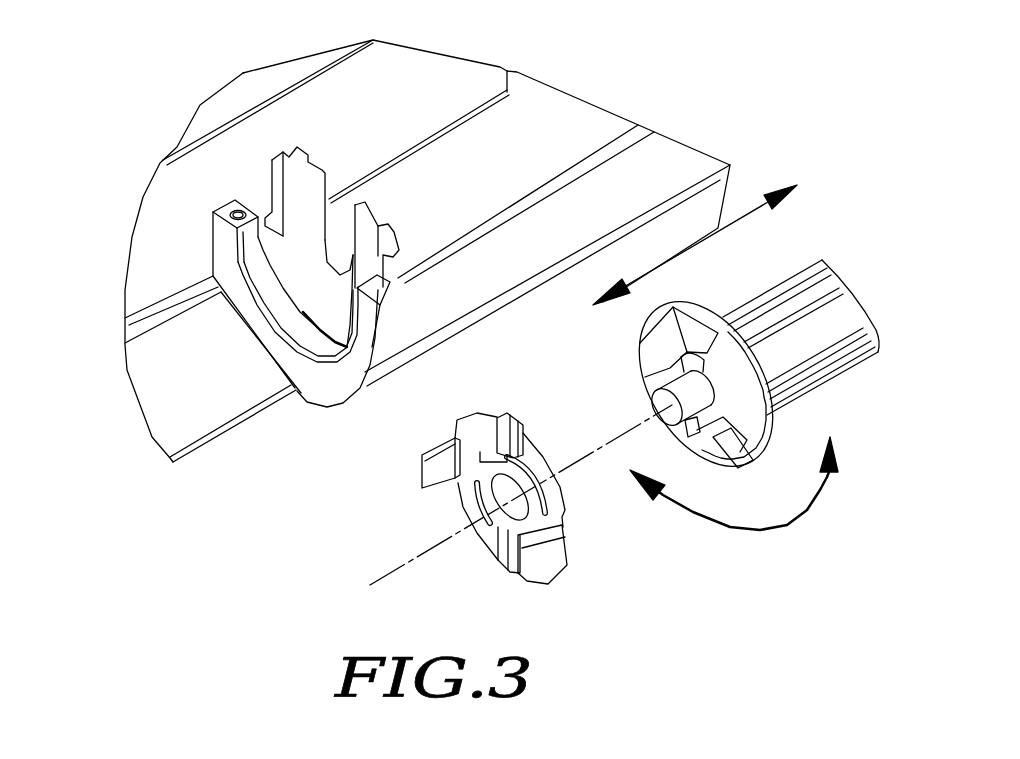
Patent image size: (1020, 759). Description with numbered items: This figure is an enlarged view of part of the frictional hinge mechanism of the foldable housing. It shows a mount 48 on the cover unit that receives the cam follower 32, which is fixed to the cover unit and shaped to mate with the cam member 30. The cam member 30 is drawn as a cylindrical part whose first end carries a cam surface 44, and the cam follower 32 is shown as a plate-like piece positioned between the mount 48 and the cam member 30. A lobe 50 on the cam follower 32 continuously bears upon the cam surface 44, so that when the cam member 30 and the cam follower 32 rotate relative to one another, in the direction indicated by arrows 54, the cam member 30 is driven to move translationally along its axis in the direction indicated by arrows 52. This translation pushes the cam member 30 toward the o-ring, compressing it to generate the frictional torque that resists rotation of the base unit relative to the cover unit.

The cam member 30 is at (745, 387).
The cam follower 32 is at (450, 459).
The cam surface 44 is at (723, 443).
The mount 48 is at (300, 200).
The lobe 50 is at (524, 425).
The arrows 52 is at (718, 228).
The arrows 54 is at (793, 527).